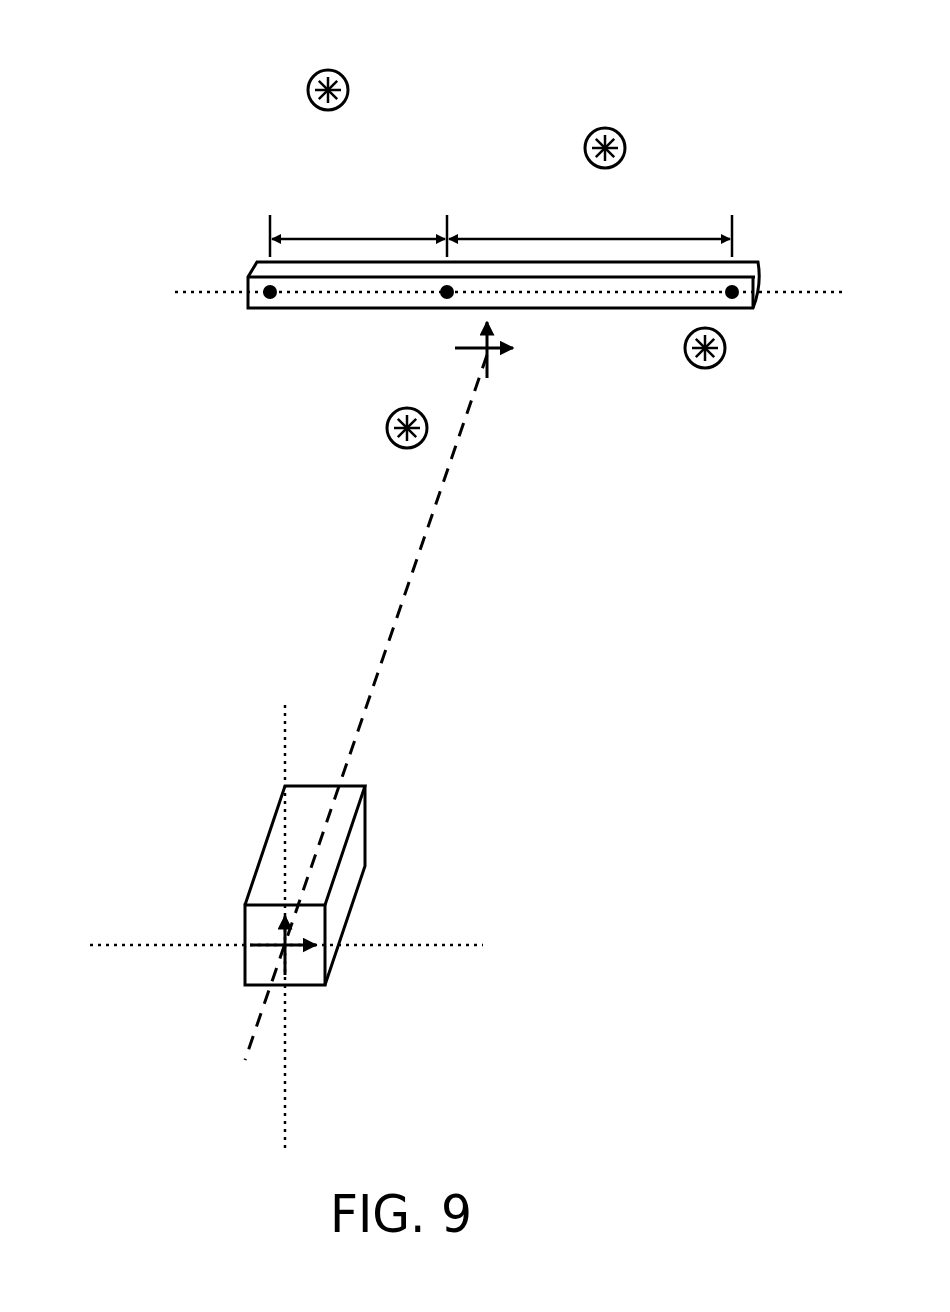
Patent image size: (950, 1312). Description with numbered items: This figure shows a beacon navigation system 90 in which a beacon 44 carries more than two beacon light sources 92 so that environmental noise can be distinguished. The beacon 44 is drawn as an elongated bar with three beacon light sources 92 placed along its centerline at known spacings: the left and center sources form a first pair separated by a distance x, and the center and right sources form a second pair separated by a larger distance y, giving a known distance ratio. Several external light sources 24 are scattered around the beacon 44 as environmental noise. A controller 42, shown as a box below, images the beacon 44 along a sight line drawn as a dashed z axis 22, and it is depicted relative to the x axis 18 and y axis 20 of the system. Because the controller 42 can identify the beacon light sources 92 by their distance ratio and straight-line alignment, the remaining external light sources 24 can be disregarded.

The beacon navigation system 90 is at (168, 46).
The beacon 44 is at (252, 275).
The beacon light sources 92 is at (270, 300).
The external light sources 24 is at (345, 78).
The z axis 22 is at (405, 590).
The y axis 20 is at (285, 742).
The x axis 18 is at (120, 945).
The controller 42 is at (365, 852).